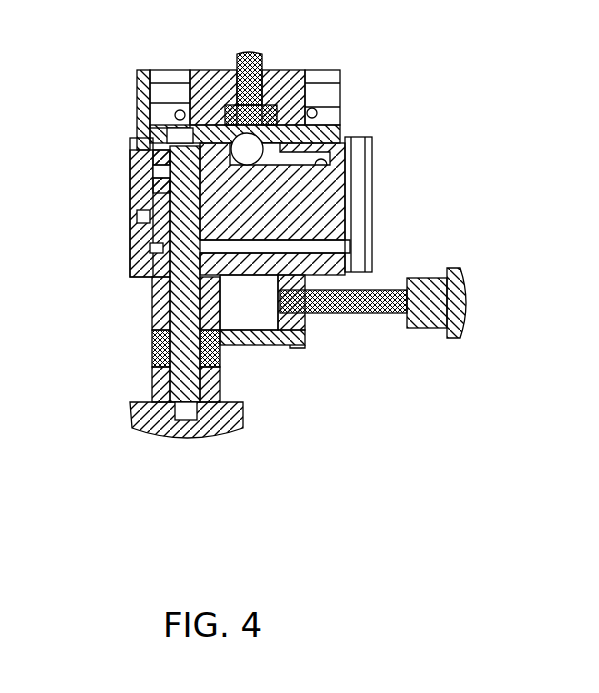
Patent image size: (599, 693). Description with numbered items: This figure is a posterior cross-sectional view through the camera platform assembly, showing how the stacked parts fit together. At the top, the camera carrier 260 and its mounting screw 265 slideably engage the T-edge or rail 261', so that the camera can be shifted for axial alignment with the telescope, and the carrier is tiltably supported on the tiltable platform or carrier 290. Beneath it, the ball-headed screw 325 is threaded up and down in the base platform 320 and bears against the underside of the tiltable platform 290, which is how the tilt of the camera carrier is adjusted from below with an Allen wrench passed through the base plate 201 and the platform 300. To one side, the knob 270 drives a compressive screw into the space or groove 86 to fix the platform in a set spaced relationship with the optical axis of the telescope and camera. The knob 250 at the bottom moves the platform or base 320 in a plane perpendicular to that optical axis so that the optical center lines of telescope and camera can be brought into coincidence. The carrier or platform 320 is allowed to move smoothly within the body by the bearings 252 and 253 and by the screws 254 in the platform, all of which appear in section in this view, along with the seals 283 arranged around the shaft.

The space or groove 86 is at (257, 345).
The base plate 201 is at (243, 300).
The knob 250 is at (240, 407).
The bearing 252 is at (148, 357).
The bearing 253 is at (153, 288).
The screw 254 is at (130, 210).
The camera carrier 260 is at (257, 137).
The T-edge or rail 261' is at (173, 68).
The mounting screw 265 is at (257, 53).
The knob 270 is at (427, 300).
The O-ring seal 283 is at (137, 163).
The tiltable platform 290 is at (333, 135).
The platform 300 is at (165, 311).
The base platform 320 is at (310, 192).
The ball-headed screw 325 is at (317, 112).